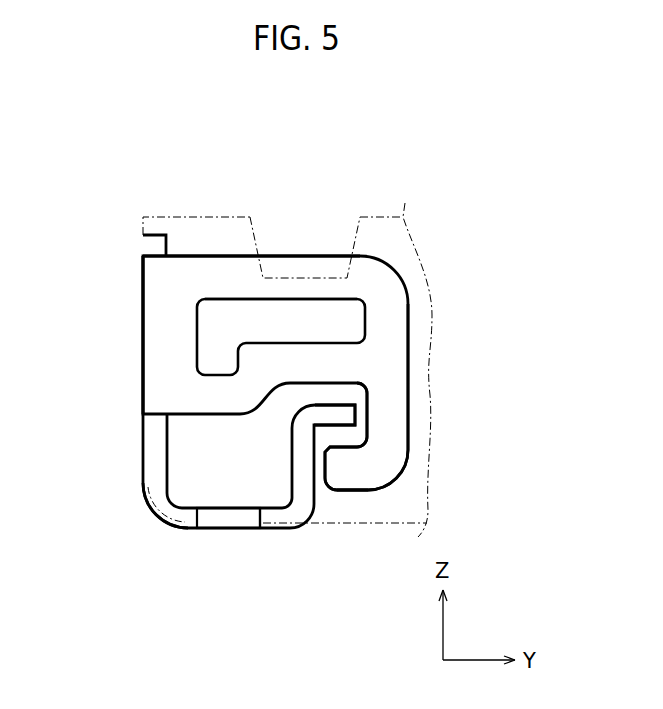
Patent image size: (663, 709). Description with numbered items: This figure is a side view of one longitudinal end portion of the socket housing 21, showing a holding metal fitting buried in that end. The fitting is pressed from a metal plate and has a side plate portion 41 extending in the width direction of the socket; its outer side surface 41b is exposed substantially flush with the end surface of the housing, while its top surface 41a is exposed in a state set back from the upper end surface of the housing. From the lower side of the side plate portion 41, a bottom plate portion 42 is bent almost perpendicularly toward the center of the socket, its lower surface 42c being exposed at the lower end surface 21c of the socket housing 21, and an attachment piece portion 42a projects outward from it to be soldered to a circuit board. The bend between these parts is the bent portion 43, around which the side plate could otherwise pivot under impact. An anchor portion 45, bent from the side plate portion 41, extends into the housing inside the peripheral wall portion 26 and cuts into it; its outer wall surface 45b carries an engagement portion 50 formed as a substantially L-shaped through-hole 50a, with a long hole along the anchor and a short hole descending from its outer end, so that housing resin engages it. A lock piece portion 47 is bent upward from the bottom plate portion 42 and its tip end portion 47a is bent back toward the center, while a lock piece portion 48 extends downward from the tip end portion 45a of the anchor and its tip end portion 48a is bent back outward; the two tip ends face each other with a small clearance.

The socket housing 21 is at (163, 214).
The lower end surface of the socket housing 21c is at (347, 524).
The peripheral wall portion 26 is at (226, 238).
The side plate portion 41 is at (385, 253).
The top surface of the side plate portion 41a is at (158, 235).
The outer side surface of the side plate portion 41b is at (143, 305).
The bottom plate portion 42 is at (210, 531).
The attachment piece portion 42a is at (232, 522).
The lower surface of the bottom plate portion 42c is at (188, 530).
The bent portion 43 is at (156, 518).
The anchor portion 45 is at (289, 257).
The tip end portion of the anchor portion 45a is at (385, 320).
The outer wall surface of the anchor portion 45b is at (192, 280).
The lock piece portion 47 is at (322, 427).
The tip end portion of the lock piece portion 47a is at (347, 410).
The lock piece portion 48 is at (409, 450).
The tip end portion of the lock piece portion 48a is at (355, 473).
The engagement portion 50 is at (370, 337).
The through-hole 50a is at (318, 307).